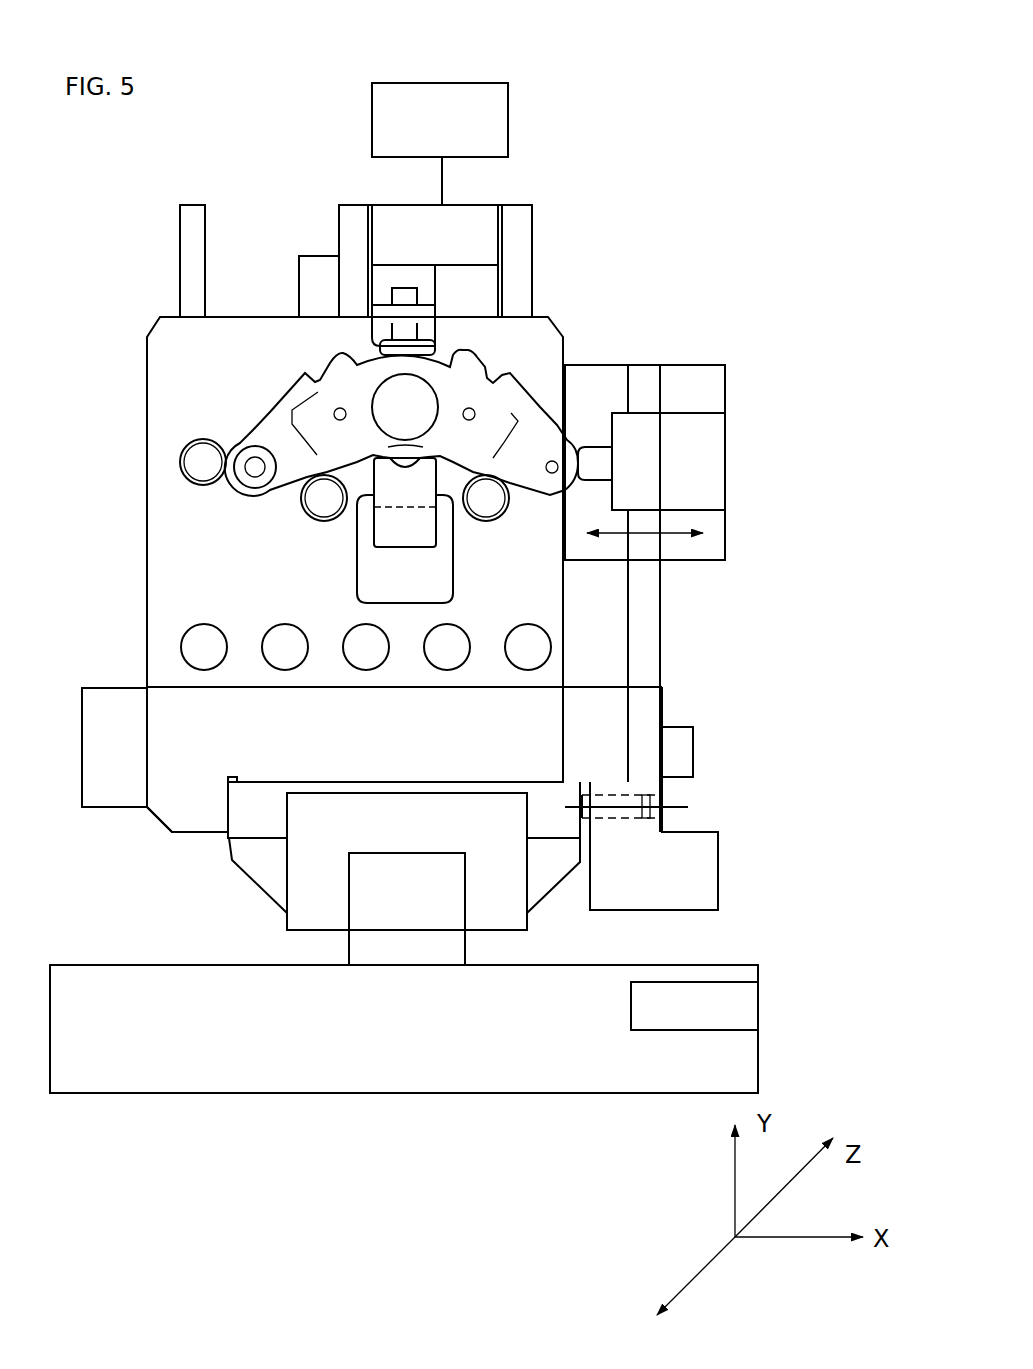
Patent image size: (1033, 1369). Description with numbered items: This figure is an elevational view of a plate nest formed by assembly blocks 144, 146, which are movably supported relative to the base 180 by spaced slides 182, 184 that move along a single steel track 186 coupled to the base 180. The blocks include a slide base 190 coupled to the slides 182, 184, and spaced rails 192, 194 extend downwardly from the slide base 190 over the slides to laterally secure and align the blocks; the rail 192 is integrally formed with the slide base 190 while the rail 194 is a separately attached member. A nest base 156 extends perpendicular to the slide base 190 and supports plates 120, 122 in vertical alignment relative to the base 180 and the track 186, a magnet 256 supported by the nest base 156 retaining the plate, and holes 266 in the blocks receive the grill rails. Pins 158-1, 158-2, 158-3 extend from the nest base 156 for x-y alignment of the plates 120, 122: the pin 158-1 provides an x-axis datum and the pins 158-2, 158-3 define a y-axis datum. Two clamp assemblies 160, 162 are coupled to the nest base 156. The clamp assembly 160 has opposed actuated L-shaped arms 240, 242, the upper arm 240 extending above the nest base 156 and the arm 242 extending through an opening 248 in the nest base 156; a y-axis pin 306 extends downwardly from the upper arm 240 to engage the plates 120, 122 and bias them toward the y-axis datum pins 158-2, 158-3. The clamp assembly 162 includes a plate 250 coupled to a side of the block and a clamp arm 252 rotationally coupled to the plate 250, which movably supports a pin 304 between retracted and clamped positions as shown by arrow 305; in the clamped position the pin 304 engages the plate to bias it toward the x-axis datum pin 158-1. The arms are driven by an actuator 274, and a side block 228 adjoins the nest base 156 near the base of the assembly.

The plate 120 is at (364, 421).
The plate 122 is at (268, 425).
The assembly block 144 is at (764, 91).
The assembly block 146 is at (670, 183).
The nest base 156 is at (247, 582).
The x-axis datum pin 158-1 is at (187, 458).
The y-axis datum pin 158-2 is at (313, 520).
The y-axis datum pin 158-3 is at (507, 502).
The clamp assembly 160 is at (493, 223).
The clamp assembly 162 is at (742, 372).
The base 180 is at (748, 962).
The slide 182 is at (318, 861).
The slide 184 is at (313, 838).
The track 186 is at (430, 928).
The slide base 190 is at (398, 767).
The rail 192 is at (178, 798).
The rail 194 is at (682, 880).
The side block 228 is at (113, 687).
The upper arm 240 is at (423, 330).
The actuated arm 242 is at (400, 540).
The opening 248 is at (360, 580).
The plate 250 is at (630, 392).
The clamp arm 252 is at (678, 458).
The magnet 256 is at (425, 418).
The holes 266 is at (206, 669).
The actuator 274 is at (443, 82).
The pin 304 is at (592, 457).
The arrow 305 is at (640, 533).
The y-axis pin 306 is at (410, 320).